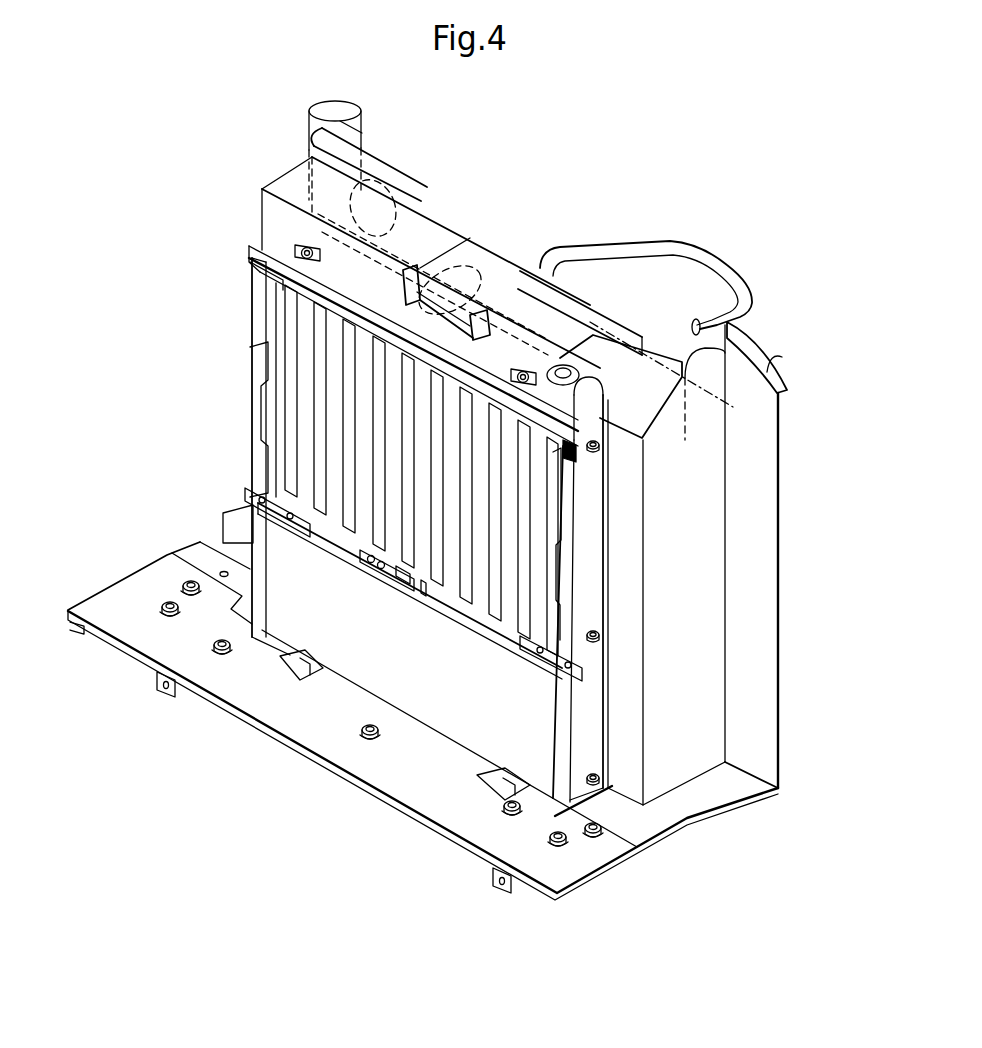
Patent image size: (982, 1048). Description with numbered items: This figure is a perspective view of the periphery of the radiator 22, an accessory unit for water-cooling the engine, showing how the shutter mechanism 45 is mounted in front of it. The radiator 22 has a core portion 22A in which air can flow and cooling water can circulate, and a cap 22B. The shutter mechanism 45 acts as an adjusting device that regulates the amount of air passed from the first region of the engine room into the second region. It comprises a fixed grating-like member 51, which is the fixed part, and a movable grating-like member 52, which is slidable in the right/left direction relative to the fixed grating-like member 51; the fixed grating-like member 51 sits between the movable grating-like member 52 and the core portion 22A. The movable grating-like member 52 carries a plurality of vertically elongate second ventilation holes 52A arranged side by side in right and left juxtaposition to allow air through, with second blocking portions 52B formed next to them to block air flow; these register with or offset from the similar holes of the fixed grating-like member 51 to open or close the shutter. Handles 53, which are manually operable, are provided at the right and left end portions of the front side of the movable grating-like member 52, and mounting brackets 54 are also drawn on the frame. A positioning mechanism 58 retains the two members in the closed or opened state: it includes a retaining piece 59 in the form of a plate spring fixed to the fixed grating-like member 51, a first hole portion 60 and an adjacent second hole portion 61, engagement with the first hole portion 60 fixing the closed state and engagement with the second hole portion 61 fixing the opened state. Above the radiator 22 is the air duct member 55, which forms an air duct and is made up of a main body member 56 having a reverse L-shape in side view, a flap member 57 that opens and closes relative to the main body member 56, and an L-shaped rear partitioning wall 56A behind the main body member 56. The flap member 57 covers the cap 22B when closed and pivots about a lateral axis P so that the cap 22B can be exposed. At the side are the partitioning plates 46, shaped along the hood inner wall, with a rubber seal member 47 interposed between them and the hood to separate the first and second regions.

The shutter mechanism 45 is at (192, 356).
The fixed grating-like member 51 is at (234, 318).
The movable grating-like member 52 is at (277, 293).
The second ventilation holes 52A is at (290, 422).
The second blocking portions 52B is at (333, 498).
The handles 53 is at (253, 368).
The mounting bracket 54 is at (247, 250).
The air duct member 55 is at (472, 444).
The main body member 56 is at (352, 195).
The rear partitioning wall 56A is at (660, 382).
The flap member 57 is at (473, 262).
The positioning mechanism 58 is at (368, 579).
The retaining piece 59 is at (392, 573).
The first hole portion 60 is at (405, 583).
The second hole portion 61 is at (421, 587).
The radiator 22 is at (691, 490).
The core portion 22A is at (590, 536).
The cap 22B is at (576, 243).
The partitioning plates 46 is at (770, 594).
The rubber seal member 47 is at (773, 370).
The lateral axis P is at (672, 375).